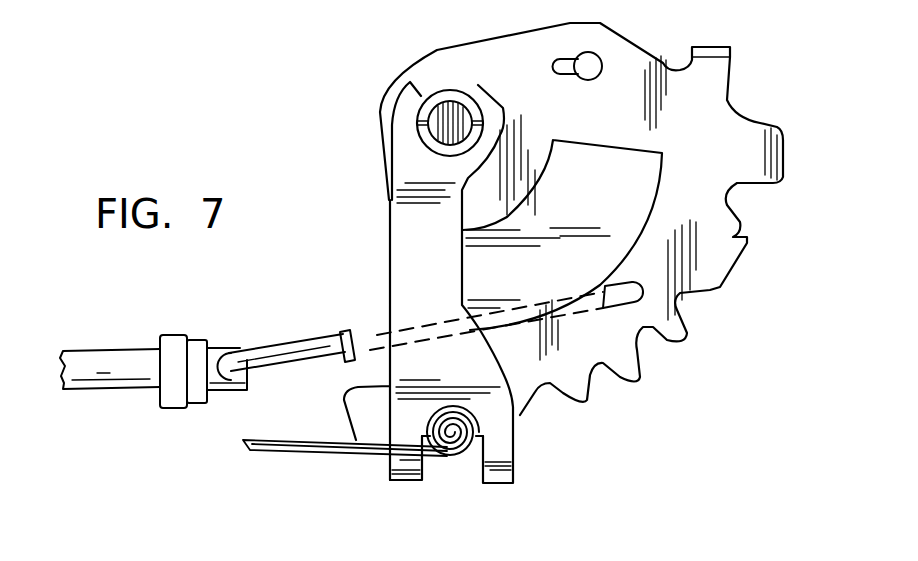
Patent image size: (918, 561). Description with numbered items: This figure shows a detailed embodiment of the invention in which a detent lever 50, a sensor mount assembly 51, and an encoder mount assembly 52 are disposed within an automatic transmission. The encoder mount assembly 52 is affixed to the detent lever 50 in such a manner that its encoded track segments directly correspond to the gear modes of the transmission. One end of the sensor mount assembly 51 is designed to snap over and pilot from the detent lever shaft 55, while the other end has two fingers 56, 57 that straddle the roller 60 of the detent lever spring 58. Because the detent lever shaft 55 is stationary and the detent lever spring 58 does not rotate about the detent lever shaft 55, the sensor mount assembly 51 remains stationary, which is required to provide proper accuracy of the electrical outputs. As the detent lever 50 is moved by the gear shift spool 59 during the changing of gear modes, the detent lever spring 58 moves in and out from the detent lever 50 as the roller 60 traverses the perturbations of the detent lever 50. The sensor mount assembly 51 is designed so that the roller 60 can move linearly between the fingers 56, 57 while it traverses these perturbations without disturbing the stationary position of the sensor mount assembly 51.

The detent lever 50 is at (757, 127).
The sensor mount assembly 51 is at (380, 253).
The encoder mount assembly 52 is at (558, 354).
The detent lever shaft 55 is at (480, 107).
The finger 56 is at (402, 462).
The finger 57 is at (507, 462).
The detent lever spring 58 is at (247, 445).
The gear shift spool 59 is at (237, 353).
The roller 60 is at (440, 453).